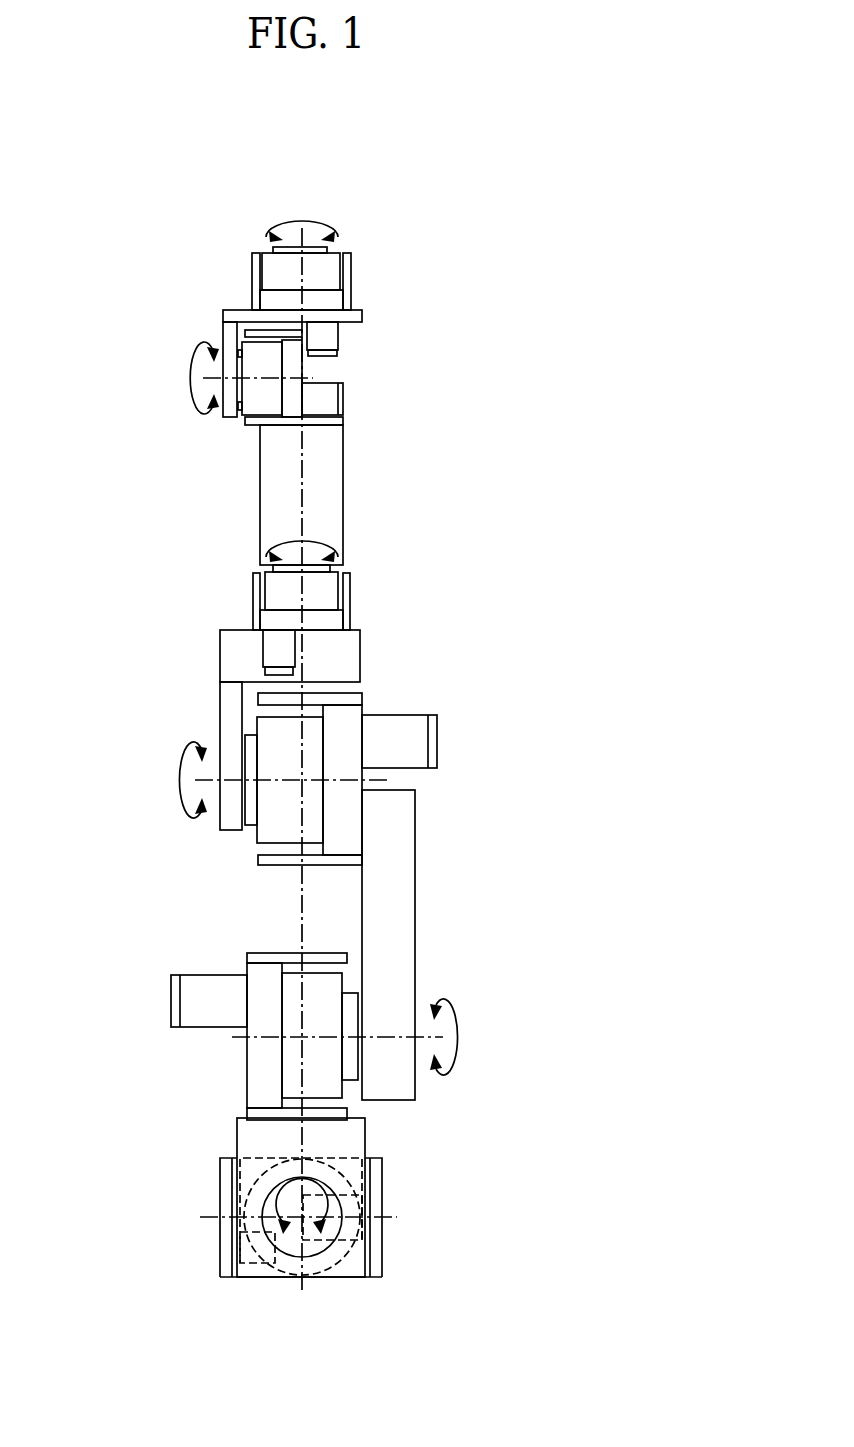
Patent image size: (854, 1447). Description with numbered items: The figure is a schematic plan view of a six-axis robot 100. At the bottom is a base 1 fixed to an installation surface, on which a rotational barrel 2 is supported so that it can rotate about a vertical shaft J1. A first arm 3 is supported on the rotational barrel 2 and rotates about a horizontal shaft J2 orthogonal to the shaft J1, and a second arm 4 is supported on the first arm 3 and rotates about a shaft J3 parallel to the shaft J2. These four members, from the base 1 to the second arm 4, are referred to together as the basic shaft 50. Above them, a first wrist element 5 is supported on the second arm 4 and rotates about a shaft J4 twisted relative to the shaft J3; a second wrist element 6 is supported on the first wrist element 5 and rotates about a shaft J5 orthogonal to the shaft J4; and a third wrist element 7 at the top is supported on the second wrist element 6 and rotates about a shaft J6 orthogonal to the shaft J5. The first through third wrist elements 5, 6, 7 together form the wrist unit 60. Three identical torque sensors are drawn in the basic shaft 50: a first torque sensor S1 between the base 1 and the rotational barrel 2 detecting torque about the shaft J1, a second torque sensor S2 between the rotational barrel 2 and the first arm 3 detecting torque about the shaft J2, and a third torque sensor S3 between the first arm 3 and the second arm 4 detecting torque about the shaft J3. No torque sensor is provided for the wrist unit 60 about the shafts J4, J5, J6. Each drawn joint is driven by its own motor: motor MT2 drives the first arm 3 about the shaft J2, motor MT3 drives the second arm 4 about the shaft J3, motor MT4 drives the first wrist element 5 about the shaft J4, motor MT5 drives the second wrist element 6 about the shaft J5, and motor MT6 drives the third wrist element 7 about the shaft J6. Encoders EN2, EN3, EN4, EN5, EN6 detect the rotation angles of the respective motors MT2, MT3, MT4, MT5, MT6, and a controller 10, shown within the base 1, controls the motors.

The robot 100 is at (400, 205).
The wrist unit 60 is at (160, 318).
The basic shaft 50 is at (132, 727).
The base 1 is at (220, 1228).
The rotational barrel 2 is at (237, 1125).
The first arm 3 is at (415, 900).
The second arm 4 is at (220, 688).
The first wrist element 5 is at (260, 488).
The second wrist element 6 is at (238, 308).
The third wrist element 7 is at (268, 248).
The controller 10 is at (247, 1265).
The shaft J1 is at (301, 1218).
The shaft J2 is at (361, 1037).
The shaft J3 is at (266, 780).
The shaft J4 is at (302, 533).
The shaft J5 is at (235, 378).
The shaft J6 is at (302, 212).
The motor MT2 is at (193, 975).
The motor MT3 is at (417, 770).
The motor MT4 is at (263, 653).
The motor MT5 is at (325, 416).
The motor MT6 is at (338, 333).
The encoder EN2 is at (171, 996).
The encoder EN3 is at (437, 740).
The encoder EN4 is at (293, 667).
The encoder EN5 is at (343, 398).
The encoder EN6 is at (325, 356).
The first torque sensor S1 is at (343, 1170).
The second torque sensor S2 is at (357, 993).
The third torque sensor S3 is at (250, 827).